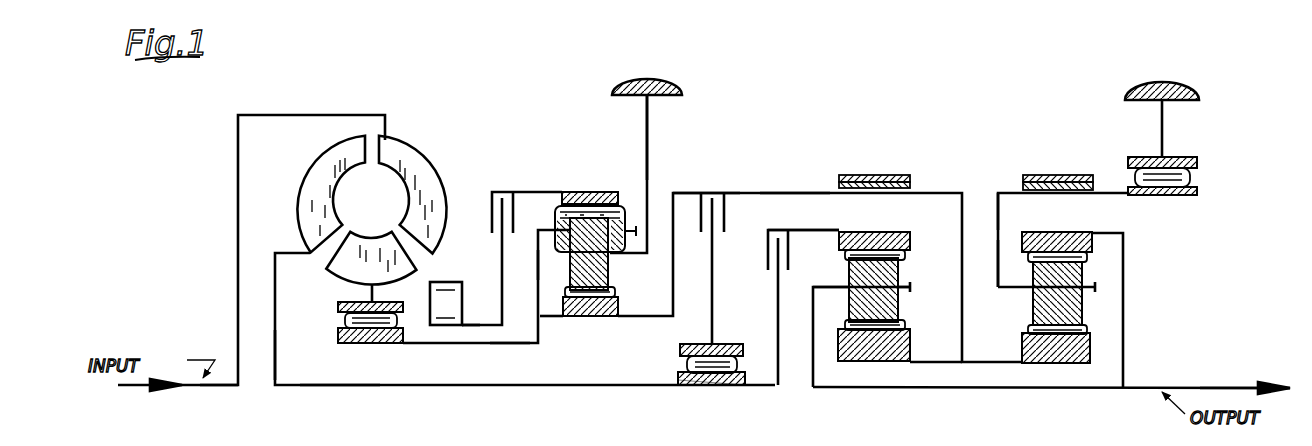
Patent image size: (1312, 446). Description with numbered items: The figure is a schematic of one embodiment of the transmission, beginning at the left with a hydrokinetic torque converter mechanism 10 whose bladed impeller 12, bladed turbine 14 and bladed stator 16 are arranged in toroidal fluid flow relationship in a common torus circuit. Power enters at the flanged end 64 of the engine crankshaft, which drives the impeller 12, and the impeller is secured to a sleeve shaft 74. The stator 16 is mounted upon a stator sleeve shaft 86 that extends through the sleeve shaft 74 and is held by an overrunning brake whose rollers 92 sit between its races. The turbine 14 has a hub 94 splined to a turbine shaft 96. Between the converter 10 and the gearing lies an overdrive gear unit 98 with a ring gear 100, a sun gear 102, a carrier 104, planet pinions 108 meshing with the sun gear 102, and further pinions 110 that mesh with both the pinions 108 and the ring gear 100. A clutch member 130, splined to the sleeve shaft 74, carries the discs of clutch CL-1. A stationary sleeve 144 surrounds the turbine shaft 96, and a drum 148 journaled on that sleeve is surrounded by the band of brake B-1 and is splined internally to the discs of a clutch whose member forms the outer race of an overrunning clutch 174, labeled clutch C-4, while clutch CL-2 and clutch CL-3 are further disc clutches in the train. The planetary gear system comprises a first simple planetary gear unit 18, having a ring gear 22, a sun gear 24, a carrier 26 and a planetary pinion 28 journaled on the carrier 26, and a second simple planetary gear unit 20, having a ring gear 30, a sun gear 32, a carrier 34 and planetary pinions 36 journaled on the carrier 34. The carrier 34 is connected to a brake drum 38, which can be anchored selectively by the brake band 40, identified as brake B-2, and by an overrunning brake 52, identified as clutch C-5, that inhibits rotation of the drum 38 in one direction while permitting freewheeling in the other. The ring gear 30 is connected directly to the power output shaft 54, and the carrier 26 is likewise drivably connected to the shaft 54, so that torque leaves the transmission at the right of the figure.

The hydrokinetic torque converter mechanism 10 is at (408, 137).
The bladed impeller 12 is at (438, 208).
The bladed turbine 14 is at (300, 212).
The bladed stator 16 is at (347, 257).
The first simple planetary gear unit 18 is at (893, 229).
The second simple planetary gear unit 20 is at (1050, 229).
The ring gear 22 is at (912, 243).
The sun gear 24 is at (912, 343).
The carrier 26 is at (905, 292).
The planetary pinion 28 is at (898, 270).
The ring gear 30 is at (1095, 245).
The sun gear 32 is at (1092, 350).
The carrier 34 is at (998, 287).
The planetary pinions 36 is at (1085, 318).
The brake drum 38 is at (1000, 192).
The brake band 40 is at (1068, 174).
The overrunning brake 52 is at (1152, 195).
The power output shaft 54 is at (1250, 386).
The flanged end of crankshaft 64 is at (220, 387).
The sleeve shaft 74 is at (472, 327).
The stator sleeve shaft 86 is at (510, 345).
The rollers 92 is at (348, 345).
The hub 94 is at (276, 355).
The turbine shaft 96 is at (334, 388).
The overdrive gear unit 98 is at (578, 178).
The ring gear 100 is at (625, 178).
The sun gear 102 is at (590, 318).
The carrier 104 is at (538, 265).
The planet pinions 108 is at (580, 318).
The pinions 110 is at (628, 252).
The clutch member 130 is at (502, 251).
The stationary sleeve 144 is at (650, 157).
The drum 148 is at (786, 192).
The overrunning clutch 174 is at (730, 343).
The clutch CL-1 is at (503, 184).
The clutch CL-2 is at (714, 189).
The clutch CL-3 is at (783, 227).
The brake B-1 is at (918, 172).
The brake B-2 is at (1074, 151).
The clutch C-4 is at (705, 389).
The clutch C-5 is at (1178, 152).